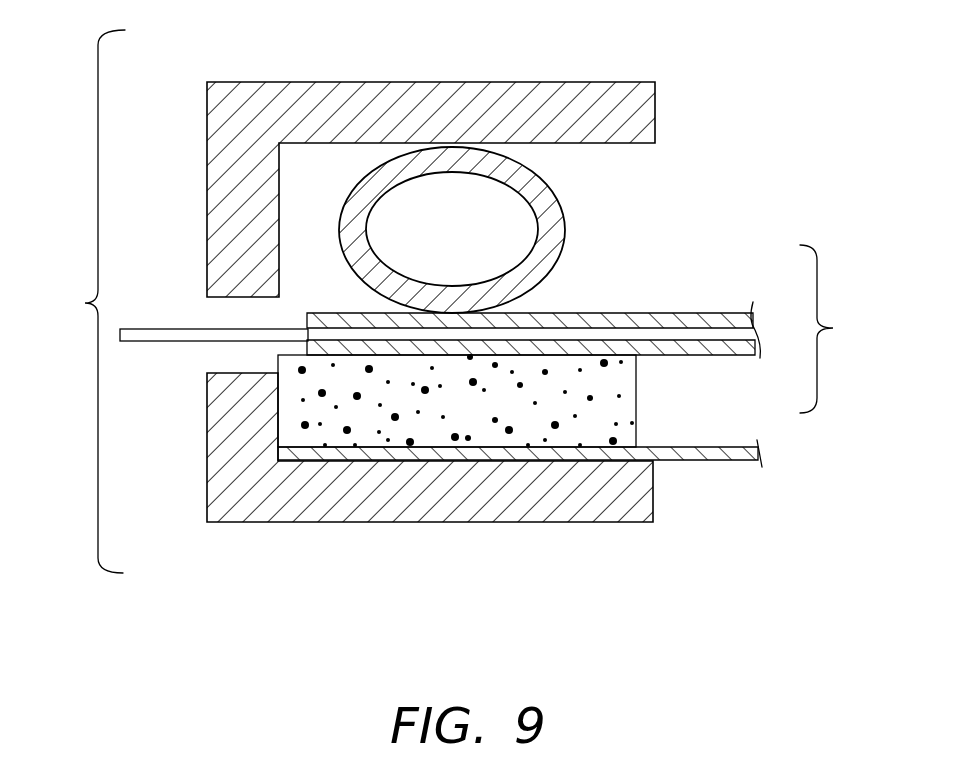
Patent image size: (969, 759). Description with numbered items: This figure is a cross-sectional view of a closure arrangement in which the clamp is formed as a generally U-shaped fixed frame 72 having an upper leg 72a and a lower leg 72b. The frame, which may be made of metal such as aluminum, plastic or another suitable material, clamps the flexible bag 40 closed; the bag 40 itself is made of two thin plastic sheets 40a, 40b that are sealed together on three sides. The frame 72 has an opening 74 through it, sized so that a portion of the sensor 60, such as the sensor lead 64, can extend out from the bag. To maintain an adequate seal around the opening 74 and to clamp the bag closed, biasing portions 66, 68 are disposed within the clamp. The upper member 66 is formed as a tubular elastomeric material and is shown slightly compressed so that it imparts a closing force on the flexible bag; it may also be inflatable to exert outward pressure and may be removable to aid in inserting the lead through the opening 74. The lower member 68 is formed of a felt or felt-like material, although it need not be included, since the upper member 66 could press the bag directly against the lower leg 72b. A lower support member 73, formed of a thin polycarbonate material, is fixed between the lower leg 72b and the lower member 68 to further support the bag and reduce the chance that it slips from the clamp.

The upper leg 72a is at (257, 82).
The lower leg 72b is at (252, 523).
The fixed frame 72 is at (86, 303).
The upper biasing member 66 is at (563, 220).
The sensor lead 64 is at (162, 343).
The opening 74 is at (215, 318).
The sensor 60 is at (282, 325).
The thin plastic sheet 40a is at (693, 313).
The thin plastic sheet 40b is at (697, 355).
The flexible bag 40 is at (808, 329).
The lower biasing member 68 is at (636, 413).
The lower support member 73 is at (715, 460).